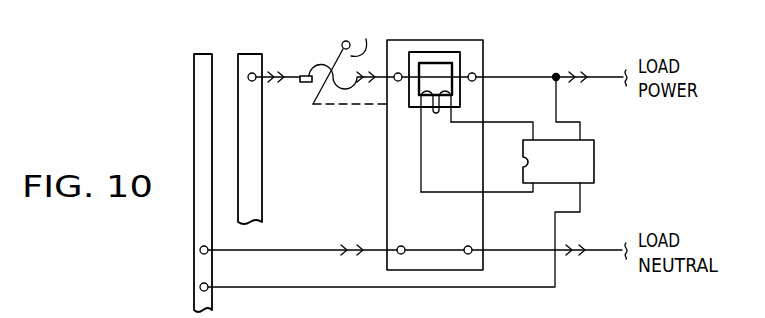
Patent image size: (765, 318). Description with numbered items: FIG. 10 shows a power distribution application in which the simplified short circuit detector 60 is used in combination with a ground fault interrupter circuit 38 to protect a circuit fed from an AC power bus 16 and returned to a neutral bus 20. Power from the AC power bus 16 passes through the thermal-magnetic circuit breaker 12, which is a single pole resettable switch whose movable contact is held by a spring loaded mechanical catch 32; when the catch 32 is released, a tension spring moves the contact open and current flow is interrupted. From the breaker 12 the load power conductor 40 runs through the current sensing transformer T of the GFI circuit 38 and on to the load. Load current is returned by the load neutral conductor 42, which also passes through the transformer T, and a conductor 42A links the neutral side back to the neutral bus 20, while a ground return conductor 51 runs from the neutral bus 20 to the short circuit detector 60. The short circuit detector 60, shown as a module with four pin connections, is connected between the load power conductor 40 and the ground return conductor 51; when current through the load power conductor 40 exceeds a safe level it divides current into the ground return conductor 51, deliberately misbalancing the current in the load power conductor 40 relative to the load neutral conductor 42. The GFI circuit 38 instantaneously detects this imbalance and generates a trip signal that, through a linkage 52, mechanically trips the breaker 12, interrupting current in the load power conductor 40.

The neutral bus 20 is at (202, 105).
The AC power bus 16 is at (262, 185).
The thermal-magnetic circuit breaker 12 is at (323, 47).
The spring loaded mechanical catch 32 is at (360, 37).
The mechanical linkage 52 is at (330, 108).
The ground fault interrupter circuit 38 is at (484, 54).
The transformer T is at (419, 56).
The load power conductor 40 is at (530, 76).
The short circuit detector 60 is at (595, 160).
The neutral conductor from strap 42A is at (282, 249).
The load neutral conductor 42 is at (503, 250).
The ground return conductor 51 is at (289, 272).